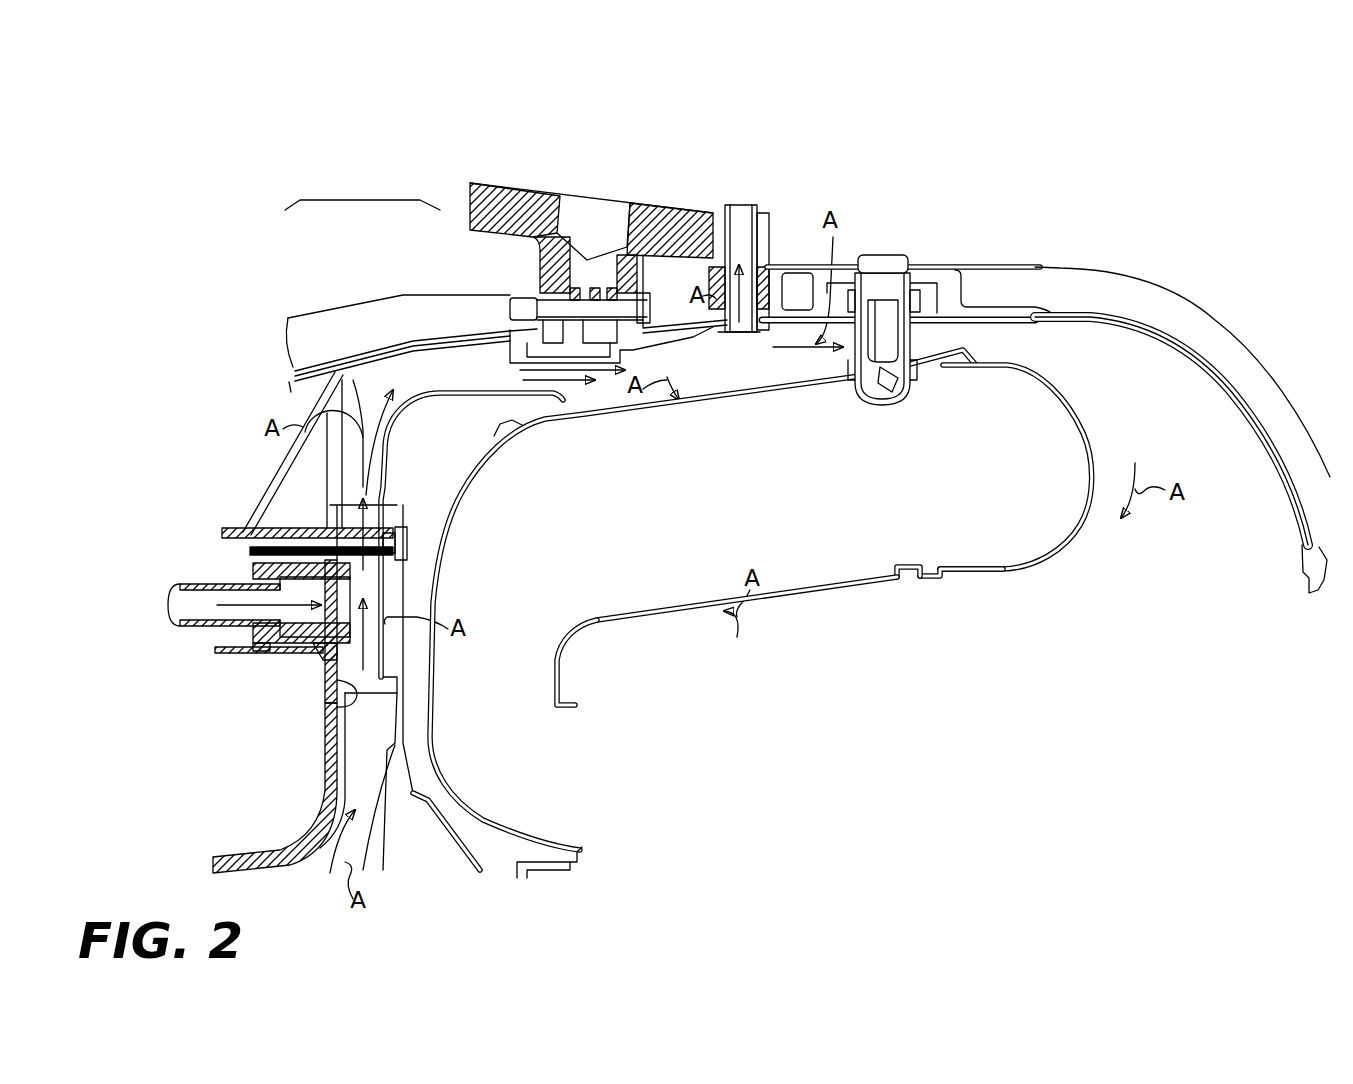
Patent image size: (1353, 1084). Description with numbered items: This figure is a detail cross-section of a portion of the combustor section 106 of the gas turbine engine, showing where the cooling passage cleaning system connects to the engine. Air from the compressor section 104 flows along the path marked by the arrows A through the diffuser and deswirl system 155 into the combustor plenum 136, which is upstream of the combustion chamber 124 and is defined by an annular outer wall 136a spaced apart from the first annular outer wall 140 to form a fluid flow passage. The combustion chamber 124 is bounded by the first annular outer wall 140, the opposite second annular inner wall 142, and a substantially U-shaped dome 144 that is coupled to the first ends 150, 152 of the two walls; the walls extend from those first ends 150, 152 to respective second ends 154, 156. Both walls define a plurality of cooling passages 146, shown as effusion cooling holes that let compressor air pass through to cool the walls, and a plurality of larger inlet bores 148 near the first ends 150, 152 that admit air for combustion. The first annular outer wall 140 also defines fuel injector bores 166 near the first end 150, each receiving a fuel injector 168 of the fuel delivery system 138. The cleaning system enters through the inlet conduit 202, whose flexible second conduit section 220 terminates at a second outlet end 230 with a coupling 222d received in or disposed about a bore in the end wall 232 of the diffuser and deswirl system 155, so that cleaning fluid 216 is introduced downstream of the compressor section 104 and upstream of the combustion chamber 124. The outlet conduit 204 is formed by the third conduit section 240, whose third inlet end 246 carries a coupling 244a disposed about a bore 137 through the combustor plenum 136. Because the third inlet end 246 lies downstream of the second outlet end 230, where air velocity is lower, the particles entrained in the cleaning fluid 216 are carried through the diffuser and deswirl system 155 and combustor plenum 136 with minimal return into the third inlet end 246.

The compressor section 104 is at (358, 200).
The combustor section 106 is at (1036, 146).
The combustion chamber 124 is at (1034, 368).
The combustor plenum 136 is at (761, 375).
The annular outer wall 136a is at (710, 322).
The bore 137 is at (700, 322).
The fuel delivery system 138 is at (920, 278).
The first annular outer wall 140 is at (774, 384).
The second annular inner wall 142 is at (785, 613).
The dome 144 is at (1105, 450).
The cooling passages 146 is at (787, 583).
The inlet bores 148 is at (912, 562).
The first end 150 is at (989, 357).
The first end 152 is at (980, 571).
The second end 154 is at (588, 870).
The diffuser and deswirl system 155 is at (289, 688).
The second end 156 is at (571, 700).
The fuel injector bores 166 is at (917, 377).
The fuel injector 168 is at (886, 317).
The inlet conduit 202 is at (149, 611).
The outlet conduit 204 is at (737, 200).
The cleaning fluid 216 is at (1110, 373).
The second conduit section 220 is at (156, 641).
The coupling 222d is at (270, 650).
The second outlet end 230 is at (246, 532).
The end wall 232 is at (357, 700).
The third conduit section 240 is at (757, 110).
The coupling 244a is at (755, 341).
The third inlet end 246 is at (708, 265).